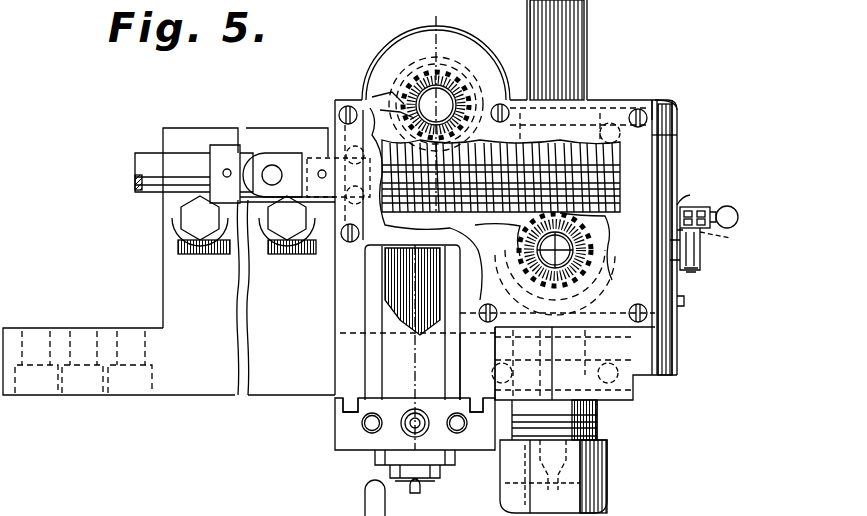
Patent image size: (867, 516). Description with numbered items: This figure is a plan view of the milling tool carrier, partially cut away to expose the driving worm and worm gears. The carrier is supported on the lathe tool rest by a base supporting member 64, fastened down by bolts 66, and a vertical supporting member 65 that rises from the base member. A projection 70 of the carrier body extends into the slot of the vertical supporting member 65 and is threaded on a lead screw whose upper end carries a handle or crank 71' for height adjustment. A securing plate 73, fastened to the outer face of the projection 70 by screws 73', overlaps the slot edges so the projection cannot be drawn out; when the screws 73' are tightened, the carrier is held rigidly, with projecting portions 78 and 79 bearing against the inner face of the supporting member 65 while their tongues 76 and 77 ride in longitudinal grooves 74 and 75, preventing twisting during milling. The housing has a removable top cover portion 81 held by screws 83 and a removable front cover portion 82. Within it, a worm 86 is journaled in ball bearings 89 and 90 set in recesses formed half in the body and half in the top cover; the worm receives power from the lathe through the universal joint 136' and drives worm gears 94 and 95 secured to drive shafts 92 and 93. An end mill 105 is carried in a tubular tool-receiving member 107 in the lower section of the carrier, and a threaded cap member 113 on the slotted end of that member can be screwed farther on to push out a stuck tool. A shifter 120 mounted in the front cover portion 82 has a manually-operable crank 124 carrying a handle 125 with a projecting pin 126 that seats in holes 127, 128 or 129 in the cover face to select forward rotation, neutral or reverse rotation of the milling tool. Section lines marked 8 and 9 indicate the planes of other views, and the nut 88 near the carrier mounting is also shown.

The section line 8- 8 is at (455, 15).
The section line 9- 9 is at (470, 239).
The base supporting member 64 is at (259, 408).
The vertical supporting member 65 is at (335, 448).
The bolts 66 is at (215, 224).
The projection 70 is at (412, 347).
The handle or crank 71' is at (359, 464).
The securing plate 73 is at (428, 458).
The screws 73' is at (436, 479).
The groove 74 is at (348, 404).
The groove 75 is at (446, 423).
The tongue 76 is at (343, 411).
The tongue 77 is at (473, 398).
The projecting portion 78 is at (335, 369).
The projecting portion 79 is at (480, 360).
The top cover portion 81 is at (678, 128).
The front cover portion 82 is at (678, 353).
The screws 83 is at (497, 104).
The worm 86 is at (436, 105).
The nut 88 is at (320, 178).
The ball bearing 89 is at (350, 243).
The ball bearing 90 is at (670, 149).
The drive shaft 92 is at (425, 76).
The drive shaft 93 is at (520, 270).
The worm gear 94 is at (396, 96).
The worm gear 95 is at (525, 256).
The end mill 105 is at (588, 28).
The tubular tool-receiving member 107 is at (598, 413).
The threaded cap member 113 is at (607, 485).
The shifter 120 is at (700, 249).
The manually-operable crank 124 is at (696, 209).
The handle 125 is at (729, 209).
The projecting pin 126 is at (696, 203).
The hole 127 is at (684, 302).
The hole 128 is at (696, 272).
The hole 129 is at (727, 236).
The universal joint 136' is at (252, 152).